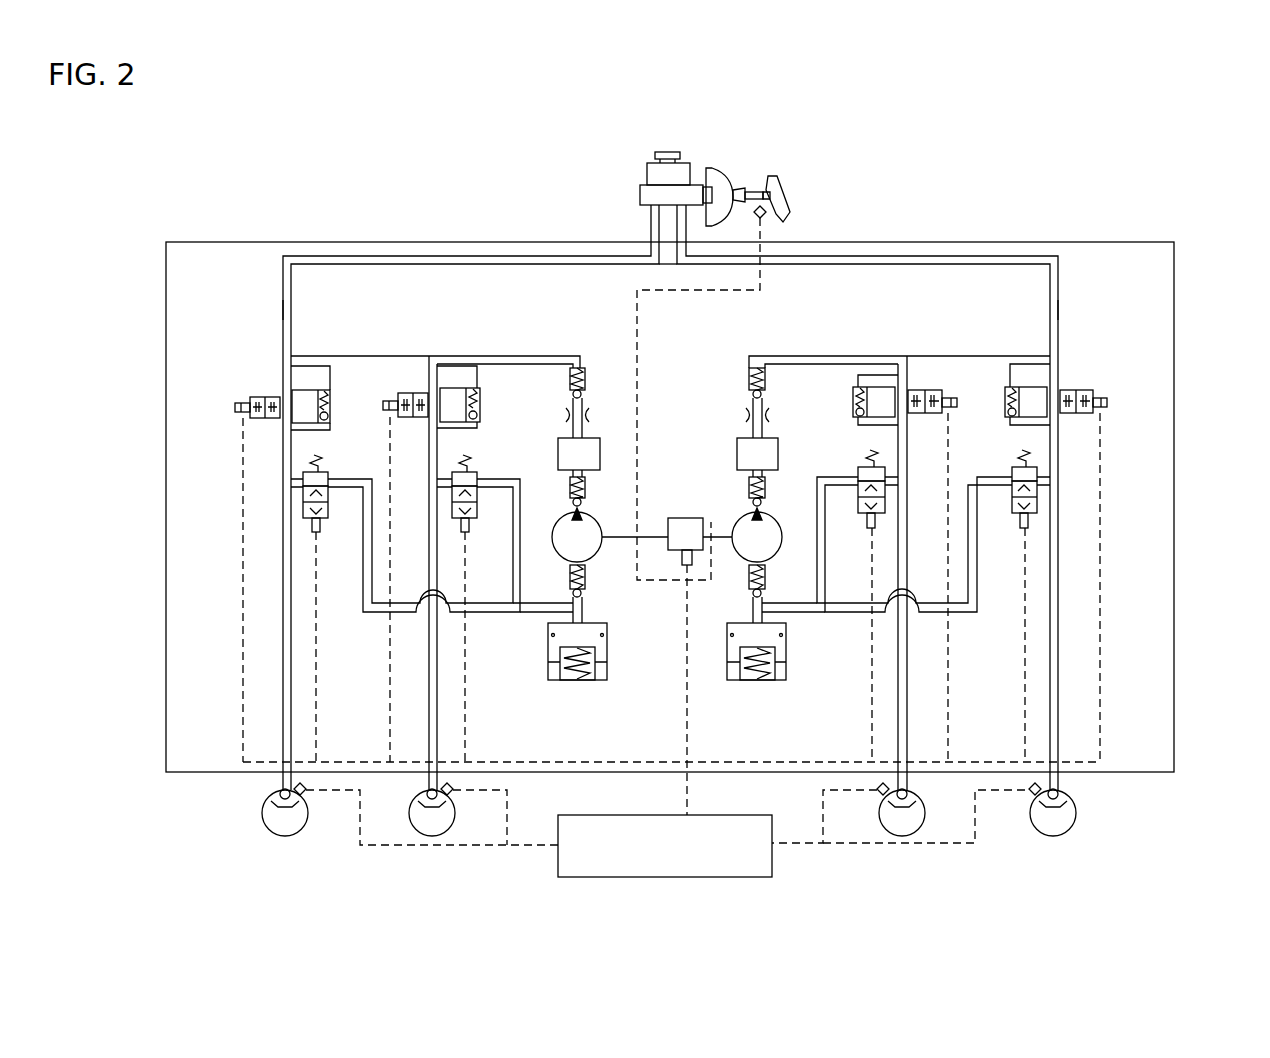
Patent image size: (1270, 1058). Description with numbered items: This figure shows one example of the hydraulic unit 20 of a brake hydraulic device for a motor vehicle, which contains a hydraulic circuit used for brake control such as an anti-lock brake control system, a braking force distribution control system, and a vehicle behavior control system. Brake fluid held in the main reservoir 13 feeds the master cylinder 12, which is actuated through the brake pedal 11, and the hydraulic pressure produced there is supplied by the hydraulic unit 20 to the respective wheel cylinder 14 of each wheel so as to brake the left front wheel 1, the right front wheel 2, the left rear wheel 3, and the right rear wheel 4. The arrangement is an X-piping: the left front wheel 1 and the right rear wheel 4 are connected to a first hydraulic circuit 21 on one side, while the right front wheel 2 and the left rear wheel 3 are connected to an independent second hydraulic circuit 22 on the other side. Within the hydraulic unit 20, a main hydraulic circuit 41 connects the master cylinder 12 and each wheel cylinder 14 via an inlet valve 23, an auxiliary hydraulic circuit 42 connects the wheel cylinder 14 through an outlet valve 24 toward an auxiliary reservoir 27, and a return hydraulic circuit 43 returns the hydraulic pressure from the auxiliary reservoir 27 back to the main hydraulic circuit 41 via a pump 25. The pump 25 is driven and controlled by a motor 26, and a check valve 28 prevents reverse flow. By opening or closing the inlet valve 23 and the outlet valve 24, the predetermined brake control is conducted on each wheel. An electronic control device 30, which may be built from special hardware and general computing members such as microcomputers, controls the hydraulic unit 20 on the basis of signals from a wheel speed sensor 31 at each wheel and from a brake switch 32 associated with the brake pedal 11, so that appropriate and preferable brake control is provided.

The left front wheel 1 is at (280, 836).
The right front wheel 2 is at (1058, 836).
The left rear wheel 3 is at (905, 836).
The right rear wheel 4 is at (430, 836).
The brake pedal 11 is at (778, 181).
The master cylinder 12 is at (640, 198).
The main reservoir 13 is at (647, 172).
The wheel cylinder 14 is at (272, 793).
The hydraulic unit 20 is at (1160, 242).
The first hydraulic circuit 21 is at (310, 256).
The second hydraulic circuit 22 is at (885, 256).
The inlet valve 23 is at (258, 397).
The outlet valve 24 is at (326, 472).
The pump 25 is at (595, 557).
The motor 26 is at (687, 518).
The auxiliary reservoir 27 is at (600, 680).
The check valve 28 is at (582, 368).
The electronic control device 30 is at (718, 877).
The wheel speed sensor 31 is at (296, 787).
The brake switch 32 is at (768, 214).
The main hydraulic circuit 41 is at (283, 302).
The auxiliary hydraulic circuit 42 is at (363, 607).
The return hydraulic circuit 43 is at (568, 418).